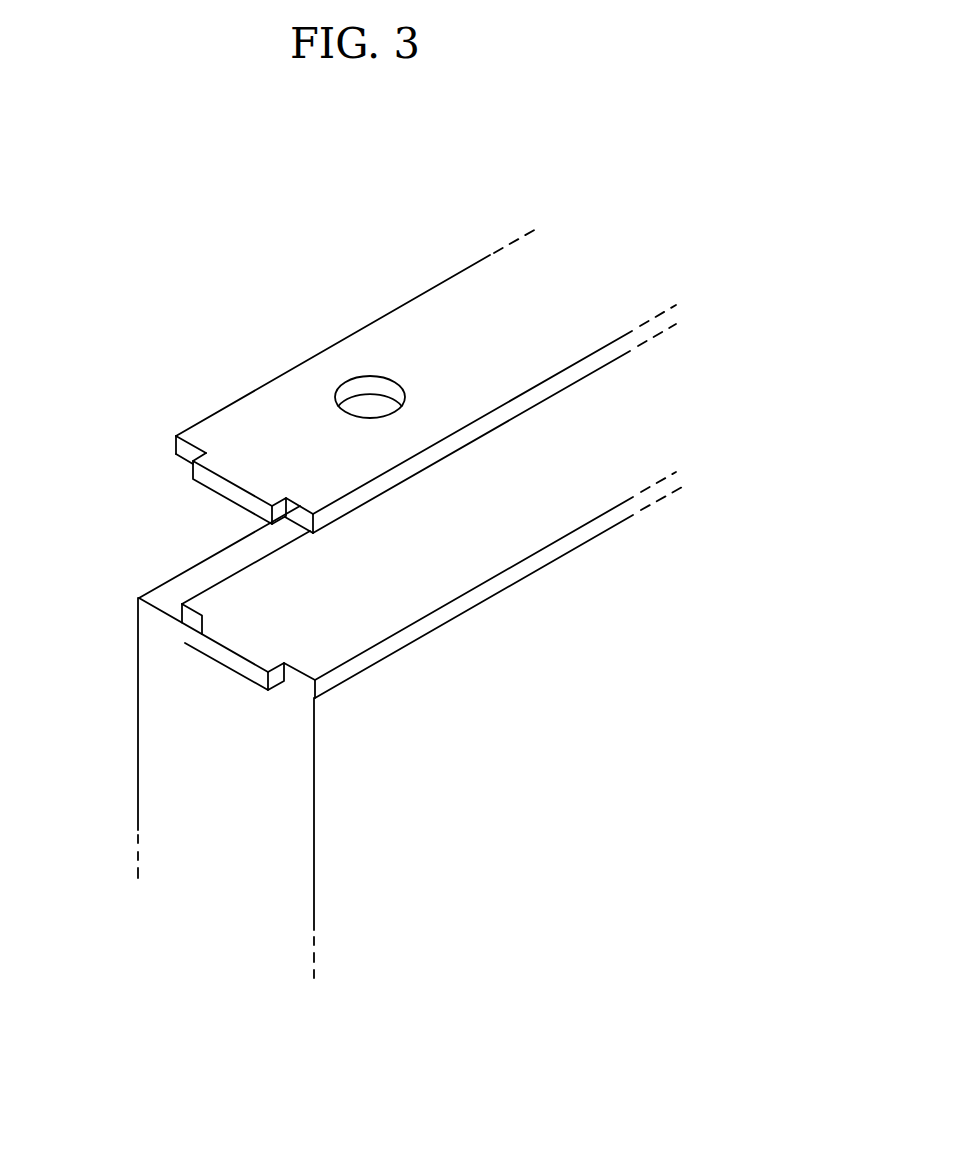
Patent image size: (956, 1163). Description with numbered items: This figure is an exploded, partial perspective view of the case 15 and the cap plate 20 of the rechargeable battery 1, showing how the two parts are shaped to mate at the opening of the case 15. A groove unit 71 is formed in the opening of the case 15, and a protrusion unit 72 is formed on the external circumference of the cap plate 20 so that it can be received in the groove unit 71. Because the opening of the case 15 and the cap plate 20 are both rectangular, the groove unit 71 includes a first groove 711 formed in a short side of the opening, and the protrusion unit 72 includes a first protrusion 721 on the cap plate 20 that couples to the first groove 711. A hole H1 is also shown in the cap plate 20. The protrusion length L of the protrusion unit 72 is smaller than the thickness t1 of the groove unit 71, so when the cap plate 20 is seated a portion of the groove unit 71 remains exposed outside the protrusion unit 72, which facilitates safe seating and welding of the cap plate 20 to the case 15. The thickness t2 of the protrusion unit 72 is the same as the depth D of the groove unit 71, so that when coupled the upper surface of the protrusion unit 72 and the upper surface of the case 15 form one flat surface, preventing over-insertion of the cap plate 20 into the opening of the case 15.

The rechargeable battery 1 is at (344, 213).
The case 15 is at (371, 725).
The cap plate 20 is at (368, 381).
The groove unit 71 is at (171, 656).
The first groove 711 is at (228, 659).
The protrusion unit 72 is at (173, 488).
The first protrusion 721 is at (200, 473).
The hole H1 is at (393, 391).
The thickness of the groove unit t1 is at (252, 698).
The thickness of the protrusion unit t2 is at (212, 520).
The protrusion length L is at (230, 516).
The depth of the groove unit D is at (178, 590).